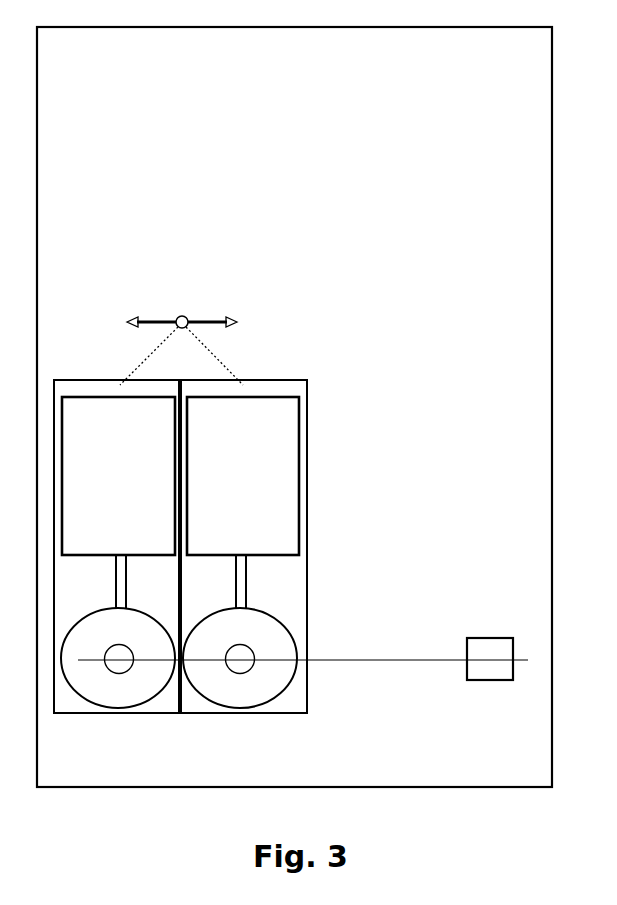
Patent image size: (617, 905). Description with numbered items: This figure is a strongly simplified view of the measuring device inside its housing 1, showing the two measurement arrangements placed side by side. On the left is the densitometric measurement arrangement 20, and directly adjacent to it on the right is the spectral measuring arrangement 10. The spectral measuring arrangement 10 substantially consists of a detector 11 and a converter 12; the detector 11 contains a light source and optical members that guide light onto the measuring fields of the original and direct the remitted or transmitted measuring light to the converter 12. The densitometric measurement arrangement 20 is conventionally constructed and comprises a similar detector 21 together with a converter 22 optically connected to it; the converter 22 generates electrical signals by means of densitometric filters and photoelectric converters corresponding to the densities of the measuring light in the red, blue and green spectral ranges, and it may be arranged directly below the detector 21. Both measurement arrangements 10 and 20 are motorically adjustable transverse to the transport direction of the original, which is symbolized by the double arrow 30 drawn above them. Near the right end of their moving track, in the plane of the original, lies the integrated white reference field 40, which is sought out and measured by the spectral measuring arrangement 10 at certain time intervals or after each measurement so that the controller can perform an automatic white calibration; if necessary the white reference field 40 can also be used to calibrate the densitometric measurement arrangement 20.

The housing 1 is at (507, 135).
The spectral measuring arrangement 10 is at (278, 593).
The detector 11 is at (240, 693).
The converter 12 is at (285, 473).
The densitometric measurement arrangement 20 is at (69, 387).
The detector 21 is at (120, 690).
The converter 22 is at (127, 427).
The double arrow 30 is at (185, 318).
The white reference field 40 is at (488, 647).